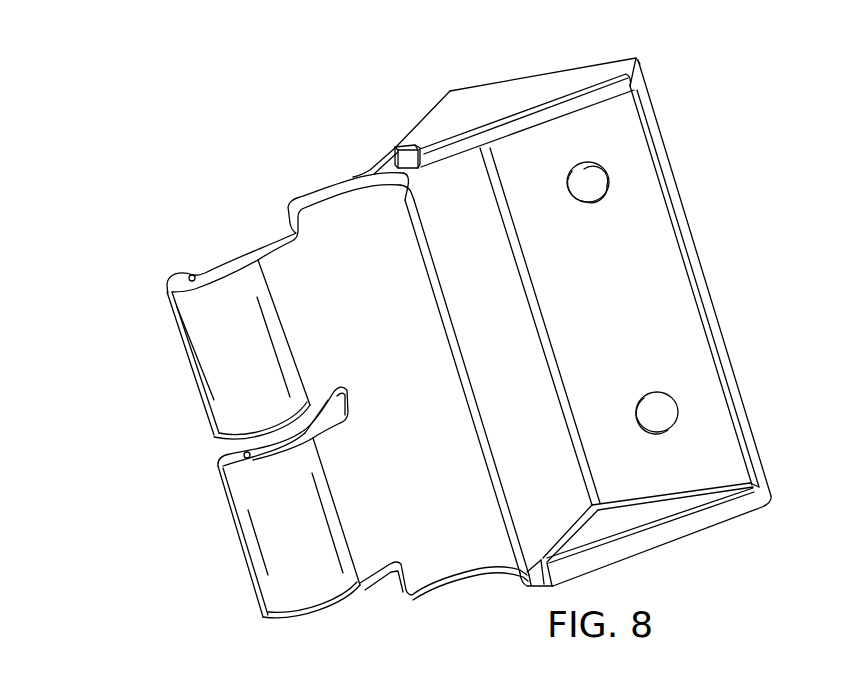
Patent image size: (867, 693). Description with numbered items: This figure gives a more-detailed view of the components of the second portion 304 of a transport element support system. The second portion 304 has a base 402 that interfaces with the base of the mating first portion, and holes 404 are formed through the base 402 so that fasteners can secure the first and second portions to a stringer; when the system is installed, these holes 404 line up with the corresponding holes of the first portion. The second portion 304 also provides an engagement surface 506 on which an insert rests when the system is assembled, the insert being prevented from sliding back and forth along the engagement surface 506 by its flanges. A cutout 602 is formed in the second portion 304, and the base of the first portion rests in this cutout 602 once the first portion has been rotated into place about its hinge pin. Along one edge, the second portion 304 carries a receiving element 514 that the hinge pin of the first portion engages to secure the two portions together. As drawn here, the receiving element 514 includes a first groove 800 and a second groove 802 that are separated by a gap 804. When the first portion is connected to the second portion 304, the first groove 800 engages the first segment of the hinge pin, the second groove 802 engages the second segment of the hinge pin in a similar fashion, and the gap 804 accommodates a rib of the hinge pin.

The second portion 304 is at (428, 116).
The base 402 is at (535, 86).
The holes 404 is at (588, 206).
The engagement surface 506 is at (453, 550).
The receiving element 514 is at (158, 328).
The cutout 602 is at (547, 498).
The first groove 800 is at (211, 270).
The second groove 802 is at (267, 450).
The gap 804 is at (222, 451).